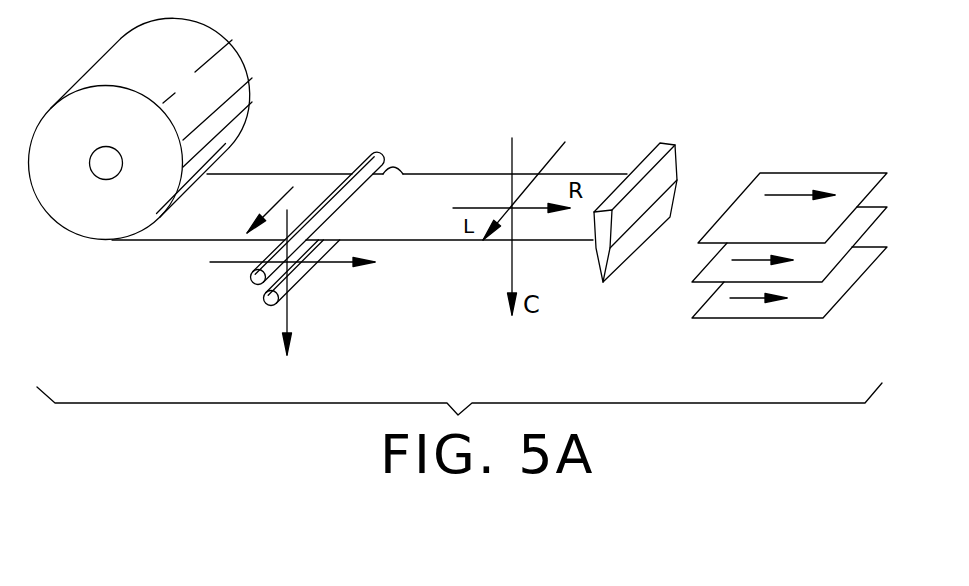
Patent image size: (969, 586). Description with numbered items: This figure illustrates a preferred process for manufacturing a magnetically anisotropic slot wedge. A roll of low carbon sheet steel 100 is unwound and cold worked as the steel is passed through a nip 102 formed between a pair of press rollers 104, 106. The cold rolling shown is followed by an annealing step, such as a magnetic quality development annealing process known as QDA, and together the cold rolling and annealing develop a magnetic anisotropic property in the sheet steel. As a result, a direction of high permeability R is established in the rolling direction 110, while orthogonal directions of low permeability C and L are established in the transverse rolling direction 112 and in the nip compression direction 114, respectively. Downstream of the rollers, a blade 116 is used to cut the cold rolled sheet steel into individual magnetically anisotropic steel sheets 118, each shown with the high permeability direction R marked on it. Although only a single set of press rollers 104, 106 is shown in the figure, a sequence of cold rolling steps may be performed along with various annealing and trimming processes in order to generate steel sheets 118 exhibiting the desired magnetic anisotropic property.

The roll of low carbon sheet steel 100 is at (227, 40).
The nip 102 is at (345, 200).
The press roller 104 is at (353, 167).
The press roller 106 is at (392, 167).
The rolling direction 110 is at (318, 265).
The transverse rolling direction 112 is at (281, 200).
The nip compression direction 114 is at (291, 297).
The blade 116 is at (638, 166).
The magnetically anisotropic steel sheets 118 is at (789, 245).